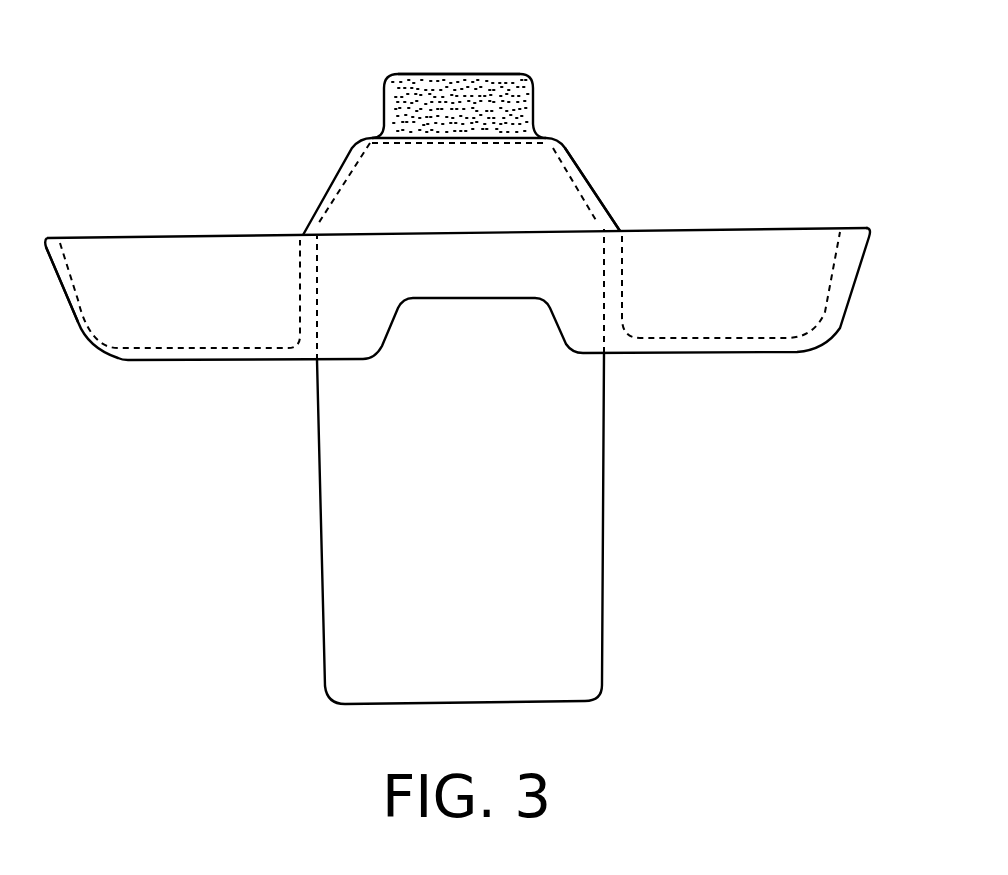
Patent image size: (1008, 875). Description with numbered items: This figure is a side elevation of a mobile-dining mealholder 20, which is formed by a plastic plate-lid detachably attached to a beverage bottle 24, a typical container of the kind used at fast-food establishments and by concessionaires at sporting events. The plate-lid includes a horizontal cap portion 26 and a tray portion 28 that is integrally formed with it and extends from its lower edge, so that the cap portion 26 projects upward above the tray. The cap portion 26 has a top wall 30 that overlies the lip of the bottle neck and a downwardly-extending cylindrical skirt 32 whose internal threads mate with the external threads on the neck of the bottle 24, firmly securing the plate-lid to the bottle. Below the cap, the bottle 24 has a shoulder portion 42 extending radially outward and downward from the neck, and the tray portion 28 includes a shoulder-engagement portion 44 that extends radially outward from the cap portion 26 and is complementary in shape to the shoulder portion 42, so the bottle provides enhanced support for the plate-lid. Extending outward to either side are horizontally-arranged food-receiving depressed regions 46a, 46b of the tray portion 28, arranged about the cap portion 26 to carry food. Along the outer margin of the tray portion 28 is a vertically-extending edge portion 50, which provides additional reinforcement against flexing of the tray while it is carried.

The mobile-dining mealholder 20 is at (700, 161).
The bottle 24 is at (588, 435).
The cap portion 26 is at (533, 95).
The tray portion 28 is at (738, 232).
The top wall 30 is at (480, 74).
The cylindrical skirt 32 is at (406, 102).
The shoulder portion 42 is at (567, 173).
The shoulder-engagement portion 44 is at (615, 210).
The food-receiving depressed region 46a is at (812, 237).
The food-receiving depressed region 46b is at (180, 263).
The vertically-extending edge portion 50 is at (75, 300).